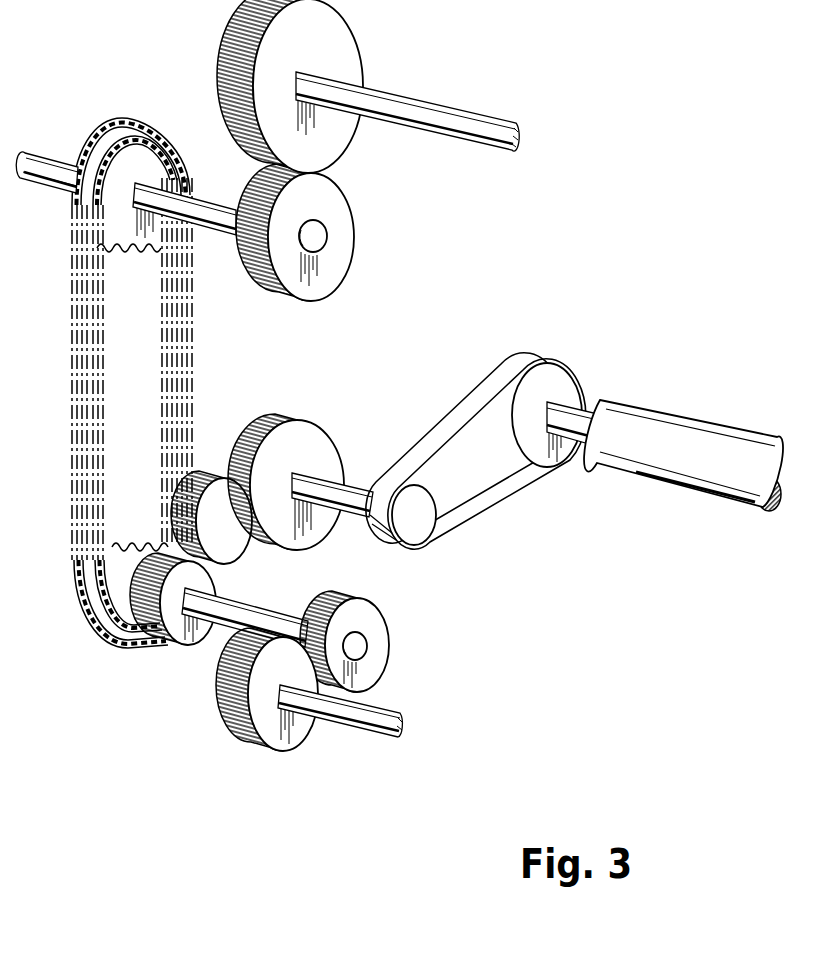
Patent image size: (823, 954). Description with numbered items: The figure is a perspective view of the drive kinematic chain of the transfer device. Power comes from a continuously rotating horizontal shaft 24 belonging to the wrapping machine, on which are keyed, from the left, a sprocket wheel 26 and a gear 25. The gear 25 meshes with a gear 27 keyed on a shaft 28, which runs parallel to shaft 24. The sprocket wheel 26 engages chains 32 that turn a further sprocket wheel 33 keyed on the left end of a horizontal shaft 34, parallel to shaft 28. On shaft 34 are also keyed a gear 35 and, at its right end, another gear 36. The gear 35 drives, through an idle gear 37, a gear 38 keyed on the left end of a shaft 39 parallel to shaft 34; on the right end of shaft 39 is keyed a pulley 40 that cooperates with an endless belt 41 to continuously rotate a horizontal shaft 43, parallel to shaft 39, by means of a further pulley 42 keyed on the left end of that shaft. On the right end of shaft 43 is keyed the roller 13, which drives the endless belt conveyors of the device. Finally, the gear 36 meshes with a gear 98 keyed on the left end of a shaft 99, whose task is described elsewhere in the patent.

The roller 13 is at (727, 445).
The horizontal shaft 24 is at (55, 168).
The gear 25 is at (345, 258).
The sprocket wheel 26 is at (131, 262).
The gear 27 is at (352, 42).
The shaft 28 is at (484, 125).
The chains 32 is at (72, 256).
The sprocket wheel 33 is at (147, 545).
The horizontal shaft 34 is at (270, 620).
The gear 35 is at (175, 634).
The gear 36 is at (368, 622).
The idle gear 37 is at (227, 500).
The gear 38 is at (308, 442).
The shaft 39 is at (350, 510).
The pulley 40 is at (418, 527).
The endless belt 41 is at (413, 448).
The pulley 42 is at (558, 455).
The horizontal shaft 43 is at (588, 420).
The gear 98 is at (267, 745).
The shaft 99 is at (358, 728).